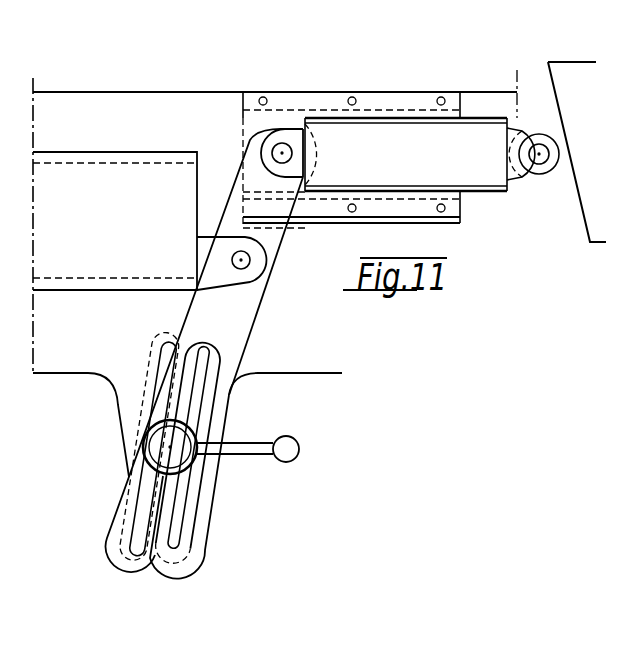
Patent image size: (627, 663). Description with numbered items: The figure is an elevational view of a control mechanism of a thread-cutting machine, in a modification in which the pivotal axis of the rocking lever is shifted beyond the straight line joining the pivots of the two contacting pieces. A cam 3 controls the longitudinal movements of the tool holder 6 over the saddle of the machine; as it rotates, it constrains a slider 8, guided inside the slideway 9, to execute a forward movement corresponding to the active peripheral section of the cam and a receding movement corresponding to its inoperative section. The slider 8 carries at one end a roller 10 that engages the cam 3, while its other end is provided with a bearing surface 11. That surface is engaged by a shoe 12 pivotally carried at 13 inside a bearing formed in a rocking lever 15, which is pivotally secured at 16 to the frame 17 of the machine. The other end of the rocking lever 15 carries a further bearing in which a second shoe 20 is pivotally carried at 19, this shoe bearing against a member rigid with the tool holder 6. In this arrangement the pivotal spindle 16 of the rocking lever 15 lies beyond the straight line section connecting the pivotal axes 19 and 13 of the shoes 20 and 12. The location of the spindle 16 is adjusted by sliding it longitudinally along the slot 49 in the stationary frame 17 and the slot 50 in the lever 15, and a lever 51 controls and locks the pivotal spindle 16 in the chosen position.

The cam 3 is at (573, 95).
The tool holder 6 is at (138, 225).
The slider 8 is at (406, 154).
The slideway 9 is at (410, 97).
The roller 10 is at (538, 182).
The bearing surface 11 is at (322, 355).
The shoe 12 is at (288, 142).
The pivot of the shoe 13 is at (272, 155).
The rocking lever 15 is at (285, 248).
The pivotal spindle 16 is at (172, 452).
The frame 17 is at (178, 576).
The pivot of the shoe 19 is at (249, 262).
The shoe 20 is at (222, 272).
The slot 49 is at (170, 360).
The slot 50 is at (196, 398).
The lever 51 is at (276, 458).